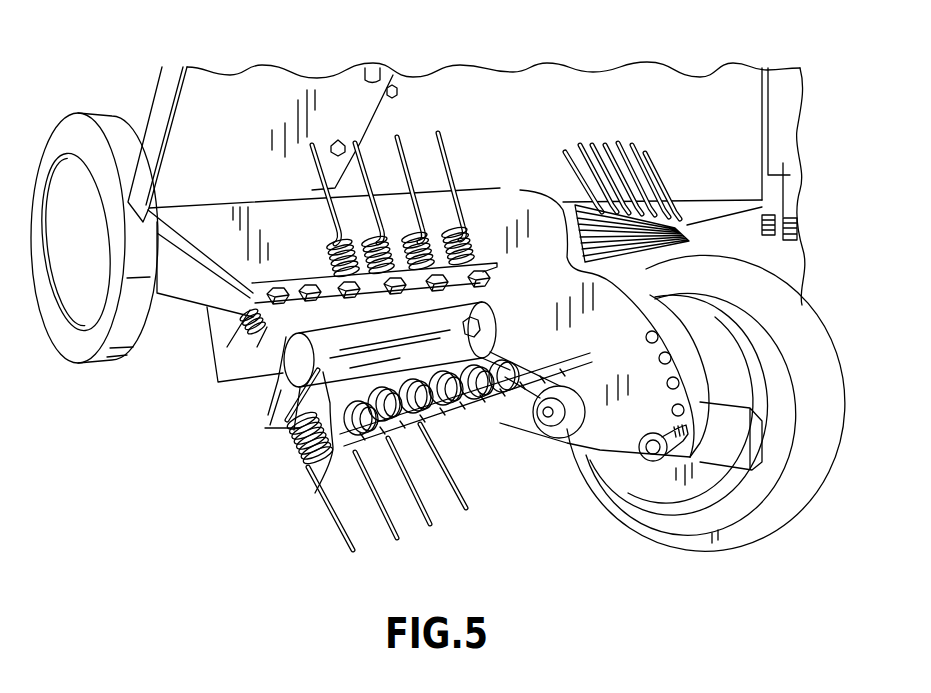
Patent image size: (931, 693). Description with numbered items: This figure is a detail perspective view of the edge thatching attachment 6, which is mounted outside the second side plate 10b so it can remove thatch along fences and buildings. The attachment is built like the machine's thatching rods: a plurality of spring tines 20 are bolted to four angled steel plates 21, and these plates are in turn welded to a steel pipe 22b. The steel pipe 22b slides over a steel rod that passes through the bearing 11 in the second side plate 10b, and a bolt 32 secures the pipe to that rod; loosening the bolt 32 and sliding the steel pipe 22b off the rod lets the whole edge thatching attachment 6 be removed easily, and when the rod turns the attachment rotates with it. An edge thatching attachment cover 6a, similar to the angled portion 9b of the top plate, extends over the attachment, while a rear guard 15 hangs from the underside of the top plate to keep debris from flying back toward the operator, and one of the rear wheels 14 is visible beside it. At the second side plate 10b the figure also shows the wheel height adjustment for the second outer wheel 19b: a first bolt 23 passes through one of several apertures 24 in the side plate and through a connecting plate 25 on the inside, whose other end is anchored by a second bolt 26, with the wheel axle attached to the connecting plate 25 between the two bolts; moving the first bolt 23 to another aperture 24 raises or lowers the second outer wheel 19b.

The edge thatching attachment 6 is at (267, 410).
The edge thatching attachment cover 6a is at (260, 88).
The angled portion of the top plate 9b is at (513, 90).
The second side plate 10b is at (627, 447).
The bearing 11 is at (497, 337).
The rear wheel 14 is at (77, 353).
The rear guard 15 is at (217, 337).
The second outer wheel 19b is at (825, 393).
The spring tines 20 is at (617, 153).
The angled steel plates 21 is at (480, 230).
The steel pipe 22b is at (322, 497).
The first bolt 23 is at (682, 440).
The apertures 24 is at (658, 335).
The connecting plate 25 is at (750, 457).
The second bolt 26 is at (550, 417).
The bolt 32 is at (473, 332).